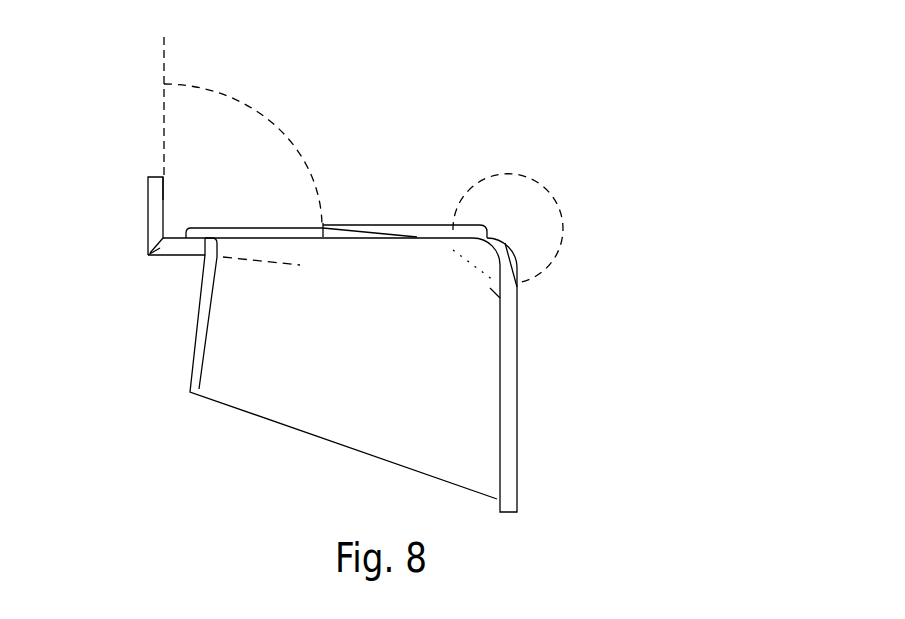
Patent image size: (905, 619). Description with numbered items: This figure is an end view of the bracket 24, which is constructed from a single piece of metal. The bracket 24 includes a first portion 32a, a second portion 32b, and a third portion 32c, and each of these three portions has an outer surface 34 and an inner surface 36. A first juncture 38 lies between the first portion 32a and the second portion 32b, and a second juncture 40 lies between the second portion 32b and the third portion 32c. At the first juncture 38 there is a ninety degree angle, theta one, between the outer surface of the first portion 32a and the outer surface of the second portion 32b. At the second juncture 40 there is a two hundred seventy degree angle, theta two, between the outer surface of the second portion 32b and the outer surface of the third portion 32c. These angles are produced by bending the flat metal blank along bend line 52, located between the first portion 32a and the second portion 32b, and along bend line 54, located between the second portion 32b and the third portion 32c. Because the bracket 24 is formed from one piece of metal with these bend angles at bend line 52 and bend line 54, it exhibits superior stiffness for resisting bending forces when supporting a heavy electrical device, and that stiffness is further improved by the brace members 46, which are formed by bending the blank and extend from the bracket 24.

The bracket 24 is at (423, 133).
The first portion 32a is at (148, 200).
The second portion 32b is at (424, 228).
The third portion 32c is at (502, 355).
The outer surface 34 is at (163, 185).
The inner surface 36 is at (148, 228).
The first juncture 38 is at (163, 238).
The second juncture 40 is at (507, 243).
The brace members 46 is at (362, 365).
The bend line 52 is at (150, 253).
The bend line 54 is at (515, 283).